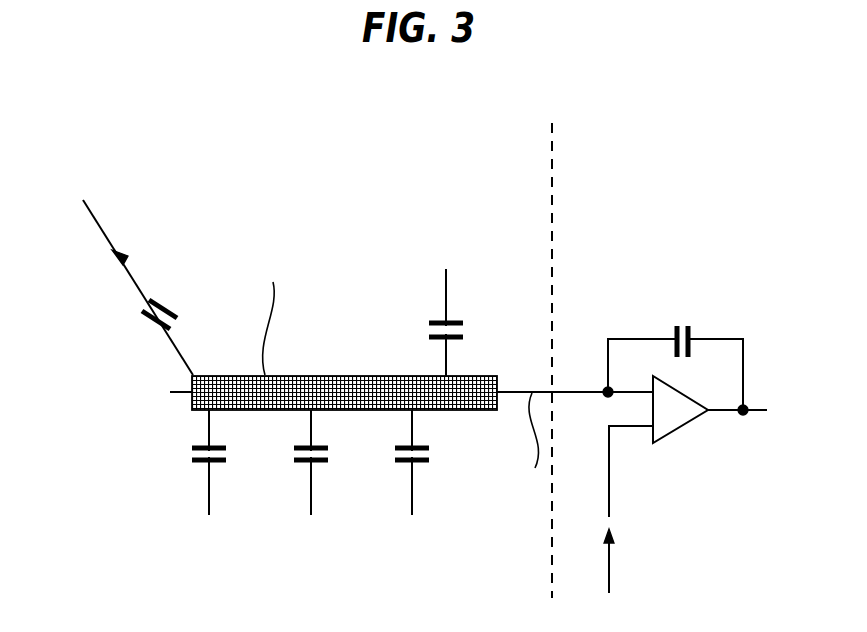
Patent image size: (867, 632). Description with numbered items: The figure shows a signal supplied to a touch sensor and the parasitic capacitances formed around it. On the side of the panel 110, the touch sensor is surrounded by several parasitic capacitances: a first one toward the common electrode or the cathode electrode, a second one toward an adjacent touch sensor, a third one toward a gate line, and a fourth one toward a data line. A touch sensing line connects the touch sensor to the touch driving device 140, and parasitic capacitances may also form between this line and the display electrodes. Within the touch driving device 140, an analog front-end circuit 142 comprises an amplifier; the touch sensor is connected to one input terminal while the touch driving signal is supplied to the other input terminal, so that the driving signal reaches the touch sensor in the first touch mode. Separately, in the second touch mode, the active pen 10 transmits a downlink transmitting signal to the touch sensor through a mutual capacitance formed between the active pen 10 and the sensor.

The active pen 10 is at (130, 265).
The panel 110 is at (514, 158).
The touch driving device 140 is at (637, 158).
The analog front-end circuit 142 is at (719, 352).